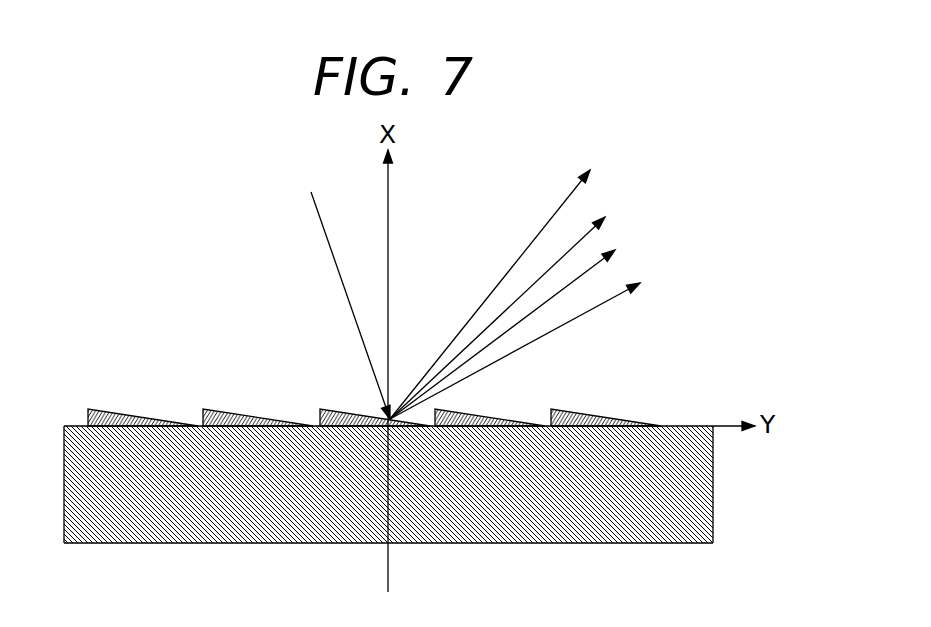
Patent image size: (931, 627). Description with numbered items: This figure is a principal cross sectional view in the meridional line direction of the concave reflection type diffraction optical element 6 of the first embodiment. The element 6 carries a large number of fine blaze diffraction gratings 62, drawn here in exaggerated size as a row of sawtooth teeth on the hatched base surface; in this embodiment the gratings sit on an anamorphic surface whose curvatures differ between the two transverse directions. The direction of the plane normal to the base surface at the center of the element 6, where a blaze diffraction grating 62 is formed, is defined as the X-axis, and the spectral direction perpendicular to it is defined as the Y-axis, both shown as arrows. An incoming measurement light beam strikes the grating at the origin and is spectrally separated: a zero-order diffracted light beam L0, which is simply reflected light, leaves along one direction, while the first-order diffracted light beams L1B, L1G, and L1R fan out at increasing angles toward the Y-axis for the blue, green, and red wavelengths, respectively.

The concave reflection type diffraction optical element 6 is at (592, 520).
The blaze diffraction grating 62 is at (219, 417).
The zero-order diffracted light beam L0 is at (500, 279).
The first-order diffracted light beam (blue) L1B is at (519, 305).
The first-order diffracted light beam (green) L1G is at (529, 325).
The first-order diffracted light beam (red) L1R is at (540, 344).